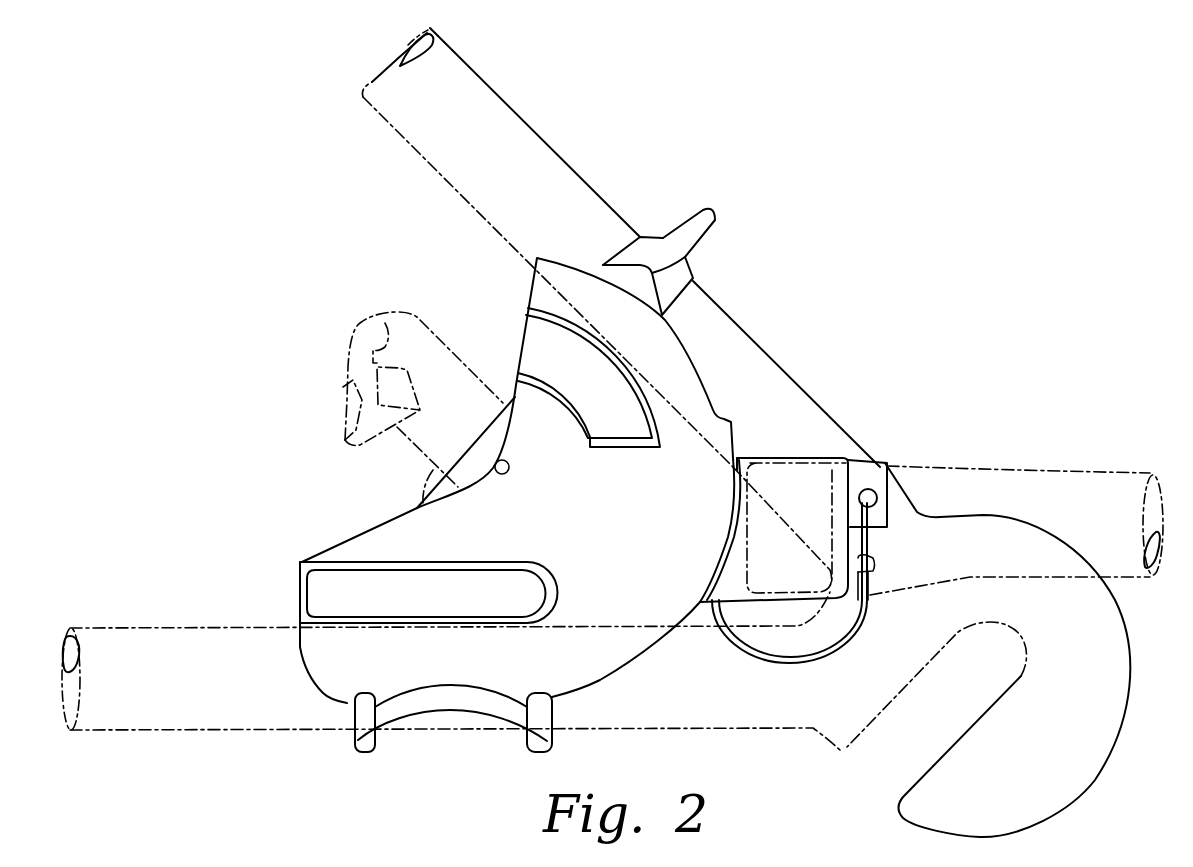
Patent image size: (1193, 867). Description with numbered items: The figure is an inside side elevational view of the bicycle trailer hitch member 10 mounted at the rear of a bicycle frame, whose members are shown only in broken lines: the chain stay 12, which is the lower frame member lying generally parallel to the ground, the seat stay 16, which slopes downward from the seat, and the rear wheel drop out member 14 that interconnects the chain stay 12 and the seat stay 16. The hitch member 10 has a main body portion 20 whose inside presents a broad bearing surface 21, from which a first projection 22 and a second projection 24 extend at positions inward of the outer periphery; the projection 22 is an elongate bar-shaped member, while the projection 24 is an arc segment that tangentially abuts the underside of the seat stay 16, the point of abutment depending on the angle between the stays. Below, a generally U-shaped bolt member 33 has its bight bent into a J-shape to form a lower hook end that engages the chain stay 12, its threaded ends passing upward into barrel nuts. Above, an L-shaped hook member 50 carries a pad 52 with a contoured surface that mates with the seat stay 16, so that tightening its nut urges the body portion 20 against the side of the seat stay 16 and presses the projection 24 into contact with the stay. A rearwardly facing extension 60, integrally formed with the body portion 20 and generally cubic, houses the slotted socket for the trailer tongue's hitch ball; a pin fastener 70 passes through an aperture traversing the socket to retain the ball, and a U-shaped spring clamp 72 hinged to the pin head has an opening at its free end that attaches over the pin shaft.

The hitch member 10 is at (612, 432).
The chain stay 12 is at (151, 693).
The rear wheel drop out member 14 is at (1021, 757).
The seat stay 16 is at (518, 121).
The main body portion 20 is at (603, 465).
The bearing surface 21 is at (622, 543).
The first projection 22 is at (327, 592).
The second projection 24 is at (537, 340).
The bolt member 33 is at (522, 733).
The hook member 50 is at (712, 220).
The pad 52 is at (683, 270).
The extension 60 is at (810, 472).
The pin fastener 70 is at (867, 477).
The spring clamp 72 is at (767, 663).